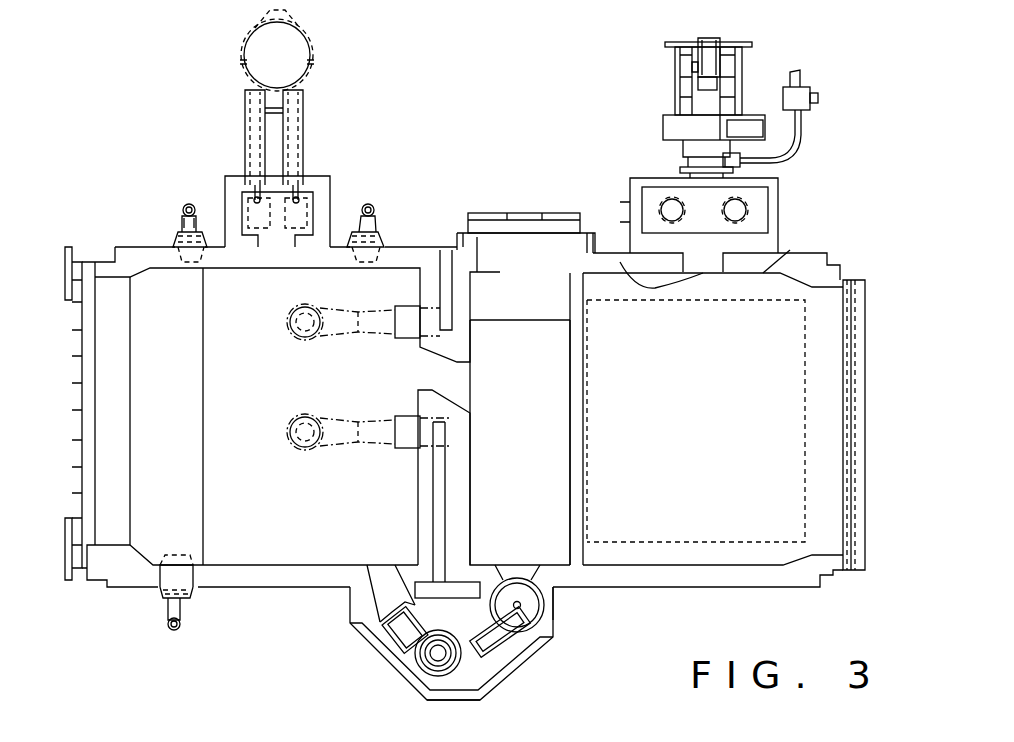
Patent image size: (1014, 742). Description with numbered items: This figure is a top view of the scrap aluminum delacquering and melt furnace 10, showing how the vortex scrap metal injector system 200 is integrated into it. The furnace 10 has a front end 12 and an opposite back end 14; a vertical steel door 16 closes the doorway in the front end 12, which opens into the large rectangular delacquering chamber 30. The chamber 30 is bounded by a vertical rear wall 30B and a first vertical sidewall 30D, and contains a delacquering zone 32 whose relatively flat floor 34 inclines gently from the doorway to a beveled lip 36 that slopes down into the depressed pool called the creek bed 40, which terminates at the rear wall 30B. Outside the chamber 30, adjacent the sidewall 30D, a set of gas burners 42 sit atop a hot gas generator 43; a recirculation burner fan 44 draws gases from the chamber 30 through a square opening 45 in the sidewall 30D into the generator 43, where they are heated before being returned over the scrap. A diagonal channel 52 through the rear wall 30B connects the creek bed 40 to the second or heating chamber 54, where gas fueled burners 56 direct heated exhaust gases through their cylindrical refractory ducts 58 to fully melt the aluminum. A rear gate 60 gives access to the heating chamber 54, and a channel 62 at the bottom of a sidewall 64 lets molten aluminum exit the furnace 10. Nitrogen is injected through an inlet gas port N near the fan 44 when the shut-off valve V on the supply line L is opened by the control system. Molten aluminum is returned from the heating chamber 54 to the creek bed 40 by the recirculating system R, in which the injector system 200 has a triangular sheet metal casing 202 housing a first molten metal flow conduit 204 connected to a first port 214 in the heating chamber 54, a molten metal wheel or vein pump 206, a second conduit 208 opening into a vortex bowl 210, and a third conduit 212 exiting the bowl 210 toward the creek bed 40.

The scrap aluminum delacquering and melt furnace 10 is at (524, 118).
The front end 12 is at (830, 118).
The back end 14 is at (170, 118).
The door 16 is at (850, 390).
The delacquering chamber 30 is at (870, 272).
The rear wall 30B is at (472, 412).
The first sidewall 30D is at (790, 250).
The delacquering zone 32 is at (765, 350).
The floor 34 is at (768, 478).
The beveled lip 36 is at (580, 502).
The creek bed 40 is at (546, 467).
The gas burners 42 is at (670, 200).
The hot gas generator 43 is at (780, 200).
The recirculation burner fan 44 is at (758, 62).
The square opening 45 is at (620, 262).
The diagonal channel 52 is at (377, 283).
The heating chamber 54 is at (415, 250).
The gas fueled burners 56 is at (185, 225).
The cylindrical refractory ducts 58 is at (148, 250).
The rear gate 60 is at (72, 412).
The channel 62 is at (275, 250).
The sidewall 64 is at (470, 215).
The vortex scrap metal injector system 200 is at (382, 672).
The sheet metal casing 202 is at (470, 700).
The first molten metal flow conduit 204 is at (383, 625).
The molten metal wheel or vein pump 206 is at (425, 672).
The second molten metal flow conduit 208 is at (527, 655).
The vortex bowl 210 is at (530, 635).
The third molten metal flow conduit 212 is at (565, 615).
The first port 214 is at (400, 595).
The inlet gas port N is at (722, 160).
The supply line L is at (802, 133).
The gas shut-off valve V is at (800, 95).
The molten metal recirculating system R is at (565, 643).